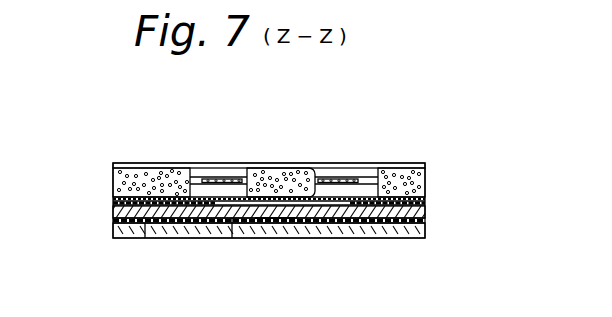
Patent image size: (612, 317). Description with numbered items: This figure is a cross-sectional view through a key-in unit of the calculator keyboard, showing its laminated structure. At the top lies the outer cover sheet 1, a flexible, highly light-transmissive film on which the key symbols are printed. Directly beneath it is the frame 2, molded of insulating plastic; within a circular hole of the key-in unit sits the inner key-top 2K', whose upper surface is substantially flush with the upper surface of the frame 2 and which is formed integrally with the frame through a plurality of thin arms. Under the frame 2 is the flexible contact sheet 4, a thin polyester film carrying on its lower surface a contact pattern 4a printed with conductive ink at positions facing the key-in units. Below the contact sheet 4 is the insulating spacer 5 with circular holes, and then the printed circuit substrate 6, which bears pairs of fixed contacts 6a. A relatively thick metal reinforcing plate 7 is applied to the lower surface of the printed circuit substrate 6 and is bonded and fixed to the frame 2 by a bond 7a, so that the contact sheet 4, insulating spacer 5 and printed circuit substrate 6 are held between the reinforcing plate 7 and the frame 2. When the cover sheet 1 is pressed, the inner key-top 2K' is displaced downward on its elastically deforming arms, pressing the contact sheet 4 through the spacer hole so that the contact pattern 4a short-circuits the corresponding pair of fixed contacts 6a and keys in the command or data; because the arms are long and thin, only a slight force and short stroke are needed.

The outer cover sheet 1 is at (170, 165).
The frame 2 is at (395, 170).
The inner key-top 2K' is at (282, 157).
The flexible contact sheet 4 is at (232, 206).
The contact pattern 4a is at (232, 238).
The insulating spacer 5 is at (145, 205).
The printed circuit substrate 6 is at (334, 218).
The fixed contacts 6a is at (289, 218).
The metal reinforcing plate 7 is at (172, 223).
The bond 7a is at (141, 238).